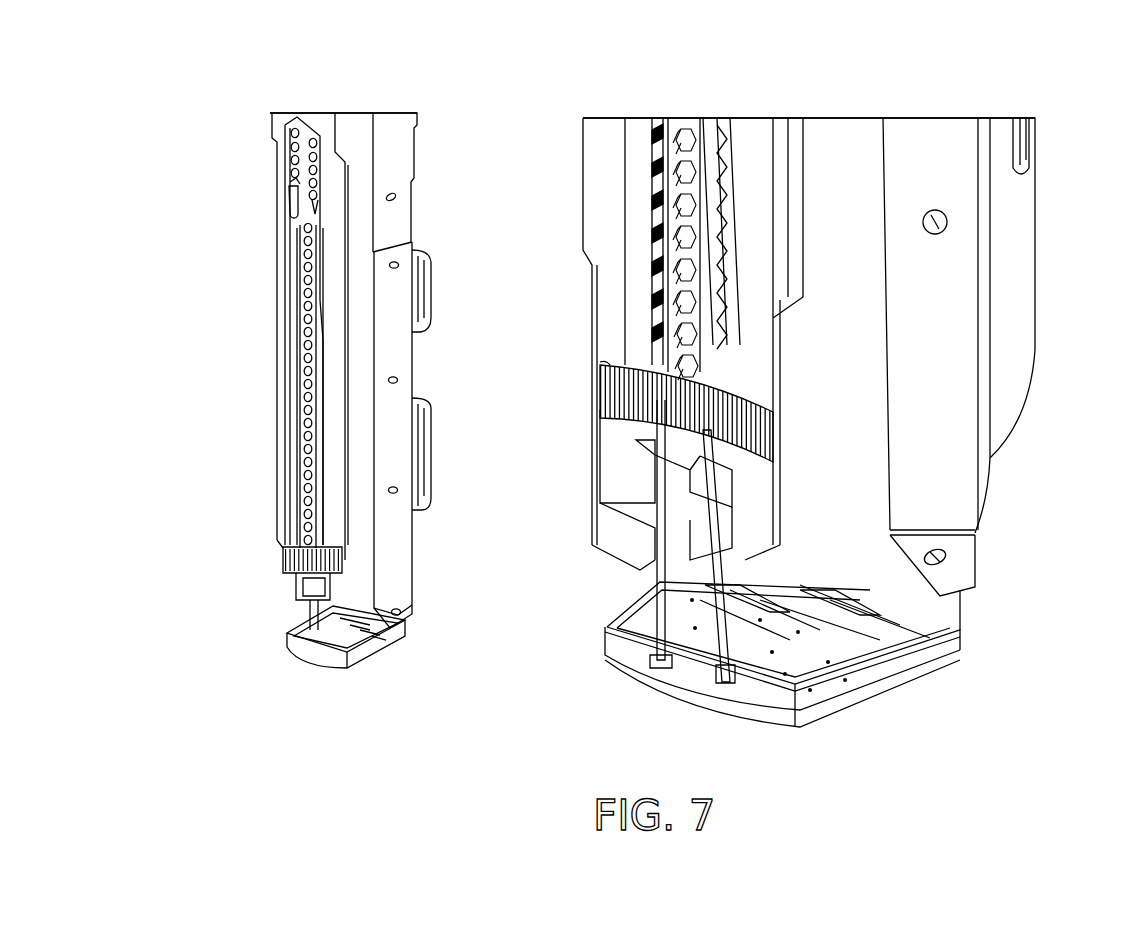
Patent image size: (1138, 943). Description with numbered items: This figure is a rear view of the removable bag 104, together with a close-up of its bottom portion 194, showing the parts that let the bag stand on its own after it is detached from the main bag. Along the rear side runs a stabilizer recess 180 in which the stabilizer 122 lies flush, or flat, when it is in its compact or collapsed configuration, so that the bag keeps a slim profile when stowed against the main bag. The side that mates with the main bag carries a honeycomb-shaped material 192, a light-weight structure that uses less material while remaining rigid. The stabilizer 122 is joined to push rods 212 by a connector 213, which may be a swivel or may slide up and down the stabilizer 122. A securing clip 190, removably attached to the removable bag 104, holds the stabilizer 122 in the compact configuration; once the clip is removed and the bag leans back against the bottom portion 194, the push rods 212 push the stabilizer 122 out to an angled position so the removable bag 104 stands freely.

The removable bag 104 is at (443, 268).
The stabilizer 122 is at (615, 478).
The stabilizer recess 180 is at (305, 356).
The securing clip 190 is at (298, 552).
The honeycomb-shaped material 192 is at (688, 172).
The bottom portion 194 is at (283, 640).
The push rods 212 is at (303, 587).
The connector 213 is at (284, 196).